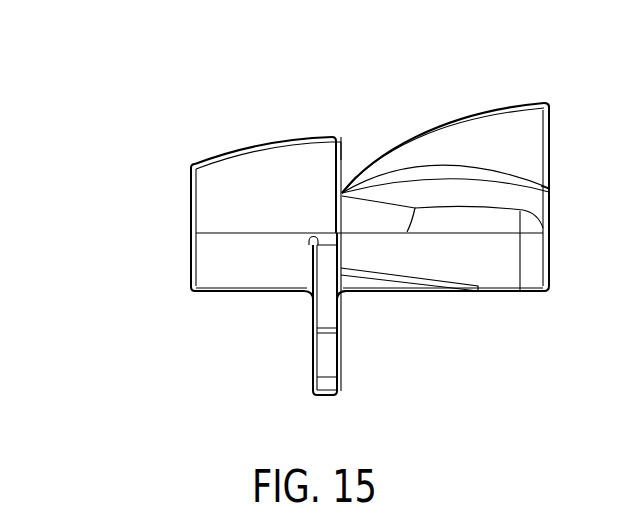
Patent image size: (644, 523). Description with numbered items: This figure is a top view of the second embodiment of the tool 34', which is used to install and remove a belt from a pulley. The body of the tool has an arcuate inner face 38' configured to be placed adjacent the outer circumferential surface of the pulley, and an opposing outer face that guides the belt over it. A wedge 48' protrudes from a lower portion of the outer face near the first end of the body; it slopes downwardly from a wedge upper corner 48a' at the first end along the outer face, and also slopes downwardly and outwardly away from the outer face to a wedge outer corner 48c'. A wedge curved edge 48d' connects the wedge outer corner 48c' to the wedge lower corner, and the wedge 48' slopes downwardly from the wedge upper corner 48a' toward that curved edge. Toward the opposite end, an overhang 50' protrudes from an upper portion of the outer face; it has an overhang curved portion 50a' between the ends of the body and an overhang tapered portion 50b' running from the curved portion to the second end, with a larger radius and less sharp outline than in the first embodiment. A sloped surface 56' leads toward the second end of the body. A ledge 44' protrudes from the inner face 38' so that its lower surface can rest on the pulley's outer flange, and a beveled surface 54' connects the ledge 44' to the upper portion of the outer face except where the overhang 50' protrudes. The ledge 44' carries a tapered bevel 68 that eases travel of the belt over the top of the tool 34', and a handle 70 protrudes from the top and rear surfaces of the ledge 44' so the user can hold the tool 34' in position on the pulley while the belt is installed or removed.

The tool 34' is at (378, 248).
The overhang 50' is at (344, 212).
The overhang tapered portion 50b' is at (263, 133).
The overhang curved portion 50a' is at (346, 122).
The ledge 44' is at (347, 299).
The wedge 48' is at (445, 178).
The wedge curved edge 48d' is at (443, 129).
The wedge outer corner 48c' is at (479, 139).
The wedge upper corner 48a' is at (580, 182).
The beveled surface 54' is at (467, 229).
The sloped surface 56' is at (409, 276).
The arcuate inner face 38' is at (445, 318).
The tapered bevel 68 is at (368, 289).
The handle 70 is at (322, 352).